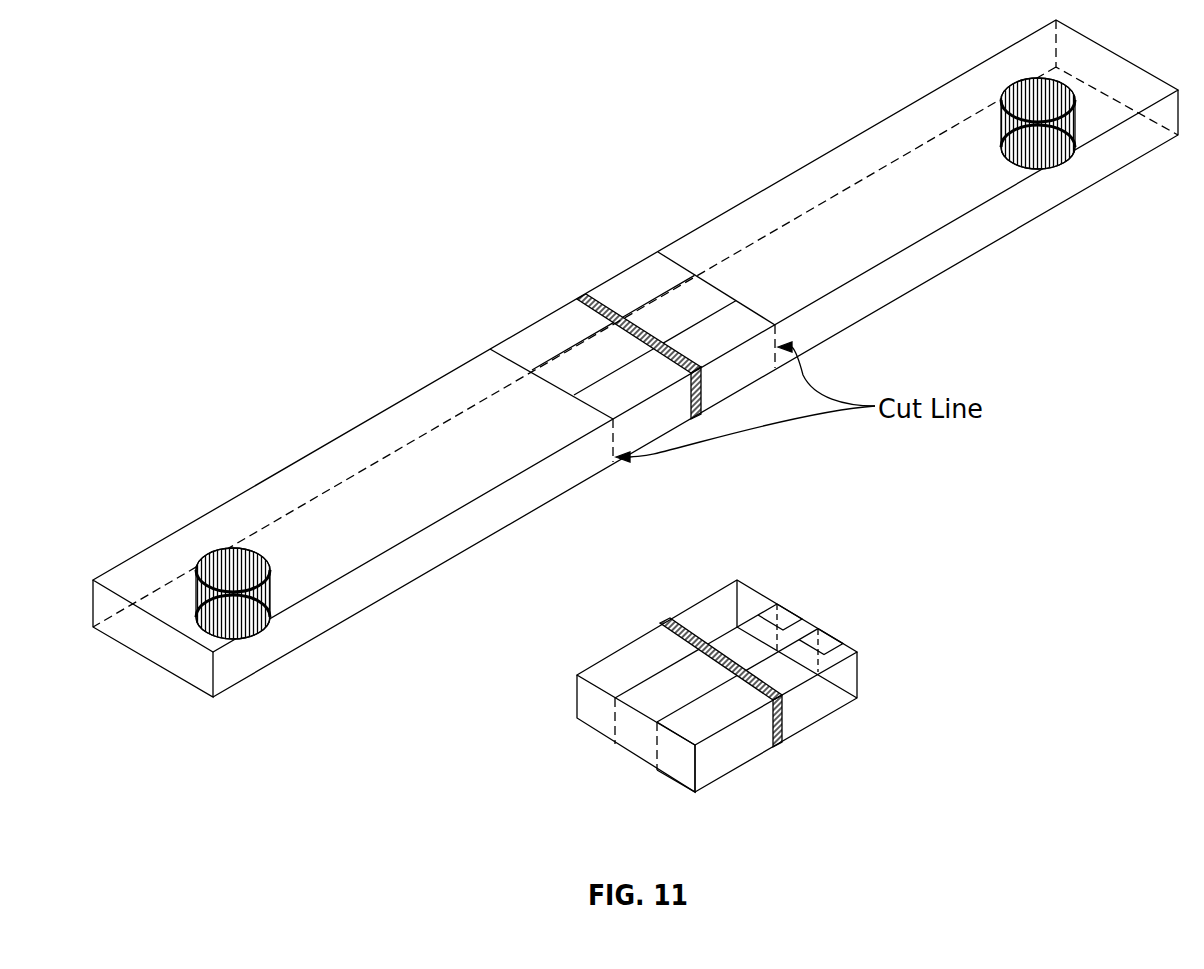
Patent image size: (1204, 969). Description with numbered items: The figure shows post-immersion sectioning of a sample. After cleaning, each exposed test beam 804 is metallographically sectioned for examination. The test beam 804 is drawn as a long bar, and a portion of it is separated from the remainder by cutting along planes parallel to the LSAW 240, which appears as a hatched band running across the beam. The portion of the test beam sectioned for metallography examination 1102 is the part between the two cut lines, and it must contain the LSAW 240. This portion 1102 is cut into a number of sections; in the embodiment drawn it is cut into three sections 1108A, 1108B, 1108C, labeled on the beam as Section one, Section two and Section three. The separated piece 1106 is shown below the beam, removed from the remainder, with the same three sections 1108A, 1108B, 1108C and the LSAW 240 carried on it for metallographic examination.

The test beam 804 is at (950, 258).
The portion of the test beam sectioned for metallography examination 1102 is at (533, 325).
The LSAW 240 is at (624, 321).
The cut-out piece 1106 is at (700, 701).
The section 1108A is at (597, 722).
The section 1108B is at (637, 748).
The section 1108C is at (683, 775).